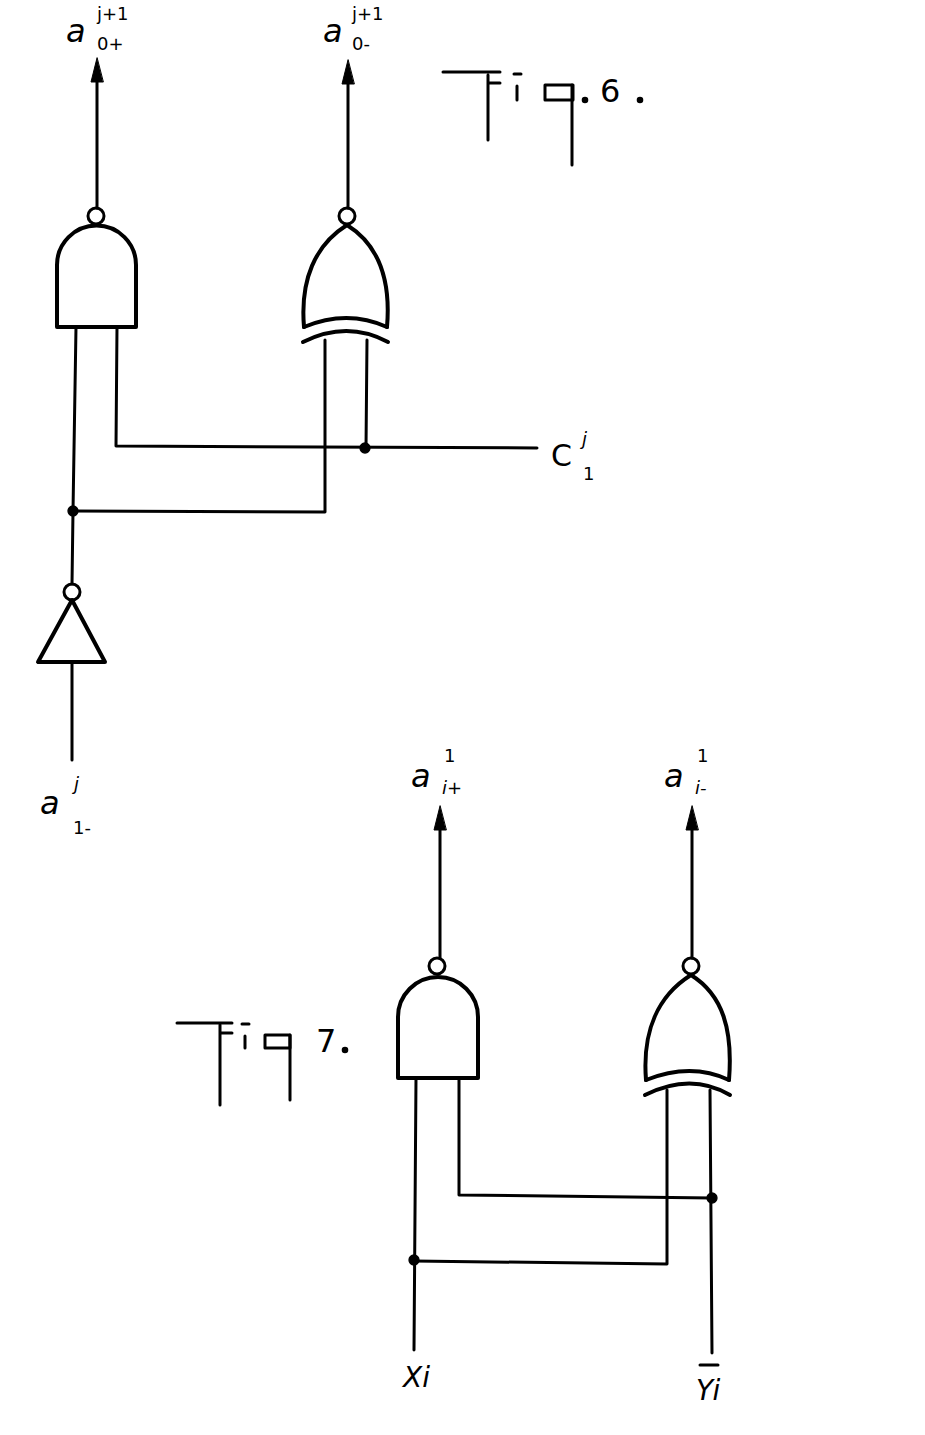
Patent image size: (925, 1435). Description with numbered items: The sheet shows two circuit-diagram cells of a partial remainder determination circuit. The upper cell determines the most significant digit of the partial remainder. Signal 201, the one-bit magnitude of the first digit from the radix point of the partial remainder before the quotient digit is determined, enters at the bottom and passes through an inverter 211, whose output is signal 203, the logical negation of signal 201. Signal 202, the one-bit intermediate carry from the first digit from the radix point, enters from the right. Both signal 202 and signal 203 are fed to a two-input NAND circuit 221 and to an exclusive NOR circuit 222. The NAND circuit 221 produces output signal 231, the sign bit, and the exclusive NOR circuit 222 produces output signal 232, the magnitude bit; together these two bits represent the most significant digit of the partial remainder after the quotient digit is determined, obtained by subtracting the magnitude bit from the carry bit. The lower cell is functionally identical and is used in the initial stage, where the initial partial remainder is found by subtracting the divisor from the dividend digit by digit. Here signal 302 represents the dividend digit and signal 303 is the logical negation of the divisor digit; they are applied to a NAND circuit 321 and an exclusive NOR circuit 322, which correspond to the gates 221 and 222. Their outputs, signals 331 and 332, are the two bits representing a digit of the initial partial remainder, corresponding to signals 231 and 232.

In FIG. 6, the signal a_1-^j 201 is at (72, 720).
In FIG. 6, the signal C^j 202 is at (470, 448).
In FIG. 6, the negated signal 203 is at (73, 557).
In FIG. 6, the inverter 211 is at (92, 632).
In FIG. 6, the two-input NAND circuit 221 is at (133, 250).
In FIG. 6, the exclusive NOR circuit 222 is at (378, 255).
In FIG. 6, the output signal a_0+^j+1 231 is at (97, 117).
In FIG. 6, the output signal a_0-^j+1 232 is at (348, 125).
In FIG. 7, the signal X_i 302 is at (414, 1310).
In FIG. 7, the negated signal Y_i 303 is at (712, 1310).
In FIG. 7, the NAND circuit 321 is at (478, 1003).
In FIG. 7, the exclusive NOR circuit 322 is at (722, 1012).
In FIG. 7, the signal a_i+^1 331 is at (440, 886).
In FIG. 7, the signal a_i-^1 332 is at (692, 886).